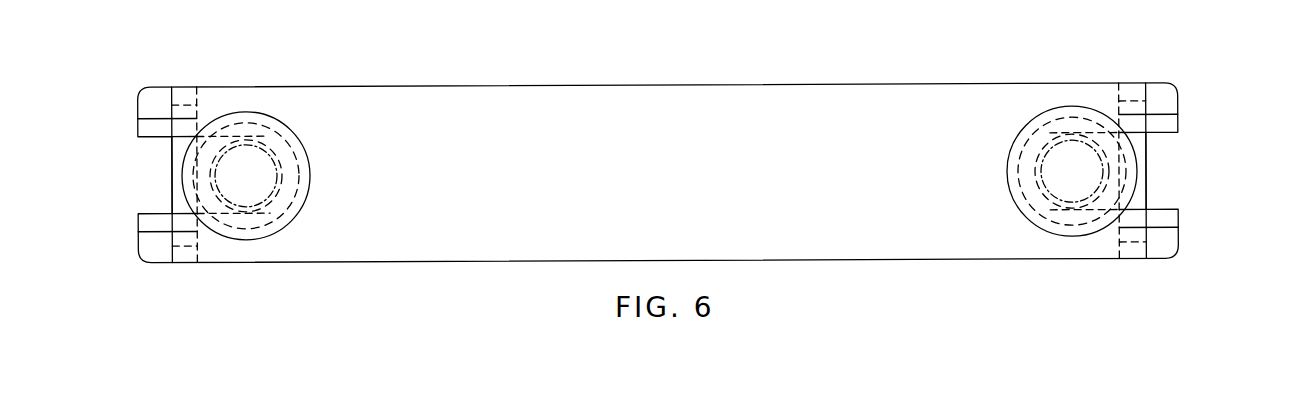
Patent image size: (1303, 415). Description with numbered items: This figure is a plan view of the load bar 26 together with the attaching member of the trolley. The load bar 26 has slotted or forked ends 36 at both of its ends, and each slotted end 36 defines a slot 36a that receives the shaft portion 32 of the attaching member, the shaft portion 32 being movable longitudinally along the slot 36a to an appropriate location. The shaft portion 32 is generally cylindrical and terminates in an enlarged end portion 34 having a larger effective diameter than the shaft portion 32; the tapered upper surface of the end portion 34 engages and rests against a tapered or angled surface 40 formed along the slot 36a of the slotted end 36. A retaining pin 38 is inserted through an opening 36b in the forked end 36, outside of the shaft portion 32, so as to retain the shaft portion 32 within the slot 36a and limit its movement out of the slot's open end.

The load bar 26 is at (680, 90).
The shaft portion 32 is at (268, 190).
The end portion 34 is at (300, 140).
The slotted end 36 is at (225, 257).
The slot 36a is at (150, 196).
The opening 36b is at (1121, 95).
The retaining pin 38 is at (172, 153).
The tapered surface 40 is at (148, 126).